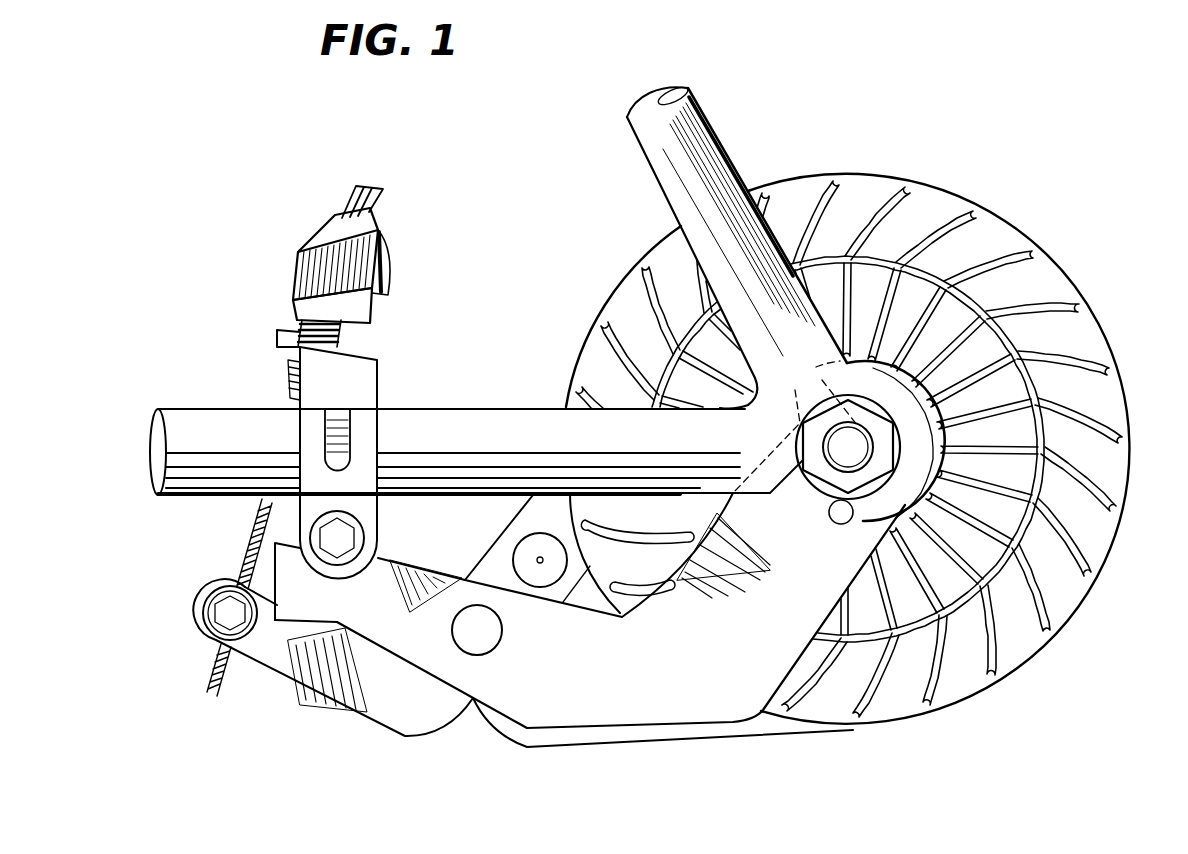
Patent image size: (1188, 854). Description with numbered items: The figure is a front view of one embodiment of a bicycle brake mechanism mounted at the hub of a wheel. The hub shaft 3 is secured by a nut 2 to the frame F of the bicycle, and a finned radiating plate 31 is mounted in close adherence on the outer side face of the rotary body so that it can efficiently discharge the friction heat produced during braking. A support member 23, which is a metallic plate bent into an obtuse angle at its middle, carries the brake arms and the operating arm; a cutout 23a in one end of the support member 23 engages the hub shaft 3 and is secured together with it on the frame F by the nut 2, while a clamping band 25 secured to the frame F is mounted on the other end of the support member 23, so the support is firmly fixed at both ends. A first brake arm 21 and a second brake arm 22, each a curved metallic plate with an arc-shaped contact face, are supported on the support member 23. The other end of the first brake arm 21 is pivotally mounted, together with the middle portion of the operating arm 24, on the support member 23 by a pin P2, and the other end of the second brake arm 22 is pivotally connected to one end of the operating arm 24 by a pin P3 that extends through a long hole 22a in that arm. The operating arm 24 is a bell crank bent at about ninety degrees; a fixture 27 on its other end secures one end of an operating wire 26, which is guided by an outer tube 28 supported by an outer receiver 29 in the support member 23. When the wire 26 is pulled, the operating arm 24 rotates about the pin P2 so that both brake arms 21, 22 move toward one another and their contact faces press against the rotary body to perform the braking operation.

The nut 2 is at (849, 478).
The hub shaft 3 is at (840, 453).
The first brake arm 21 is at (527, 740).
The second brake arm 22 is at (528, 498).
The long hole 22a is at (545, 533).
The support member 23 is at (585, 708).
The cutout 23a is at (795, 425).
The operating arm 24 is at (377, 707).
The clamping band 25 is at (300, 433).
The operating wire 26 is at (236, 552).
The fixture 27 is at (203, 632).
The outer tube 28 is at (370, 207).
The outer receiver 29 is at (292, 372).
The radiating plate 31 is at (1003, 220).
The frame F is at (462, 406).
The pin P2 is at (463, 640).
The pin P3 is at (523, 567).